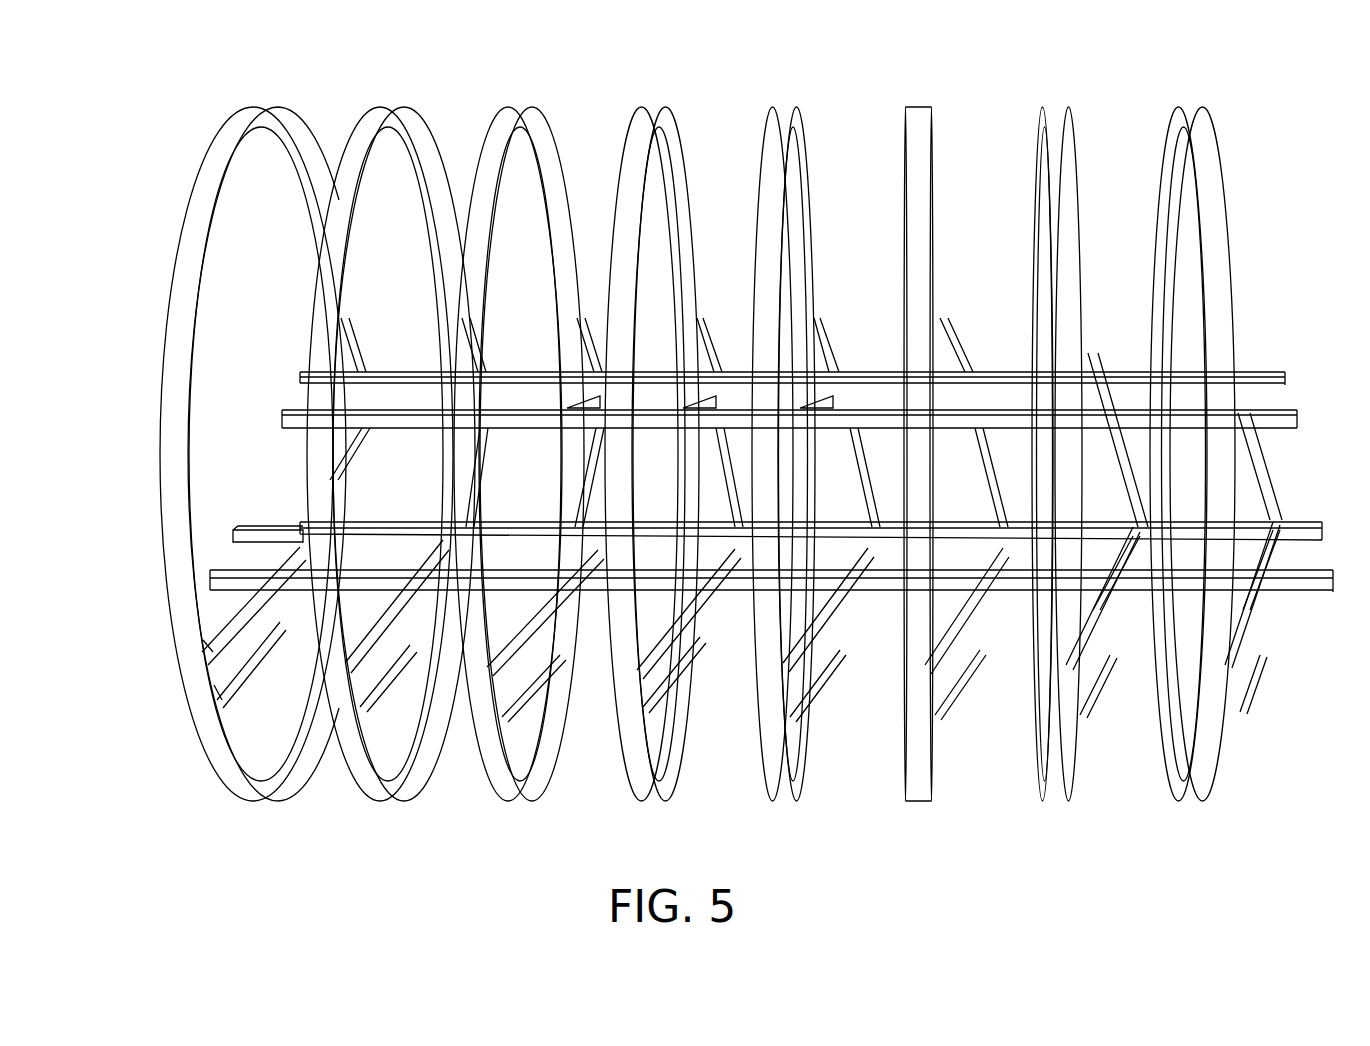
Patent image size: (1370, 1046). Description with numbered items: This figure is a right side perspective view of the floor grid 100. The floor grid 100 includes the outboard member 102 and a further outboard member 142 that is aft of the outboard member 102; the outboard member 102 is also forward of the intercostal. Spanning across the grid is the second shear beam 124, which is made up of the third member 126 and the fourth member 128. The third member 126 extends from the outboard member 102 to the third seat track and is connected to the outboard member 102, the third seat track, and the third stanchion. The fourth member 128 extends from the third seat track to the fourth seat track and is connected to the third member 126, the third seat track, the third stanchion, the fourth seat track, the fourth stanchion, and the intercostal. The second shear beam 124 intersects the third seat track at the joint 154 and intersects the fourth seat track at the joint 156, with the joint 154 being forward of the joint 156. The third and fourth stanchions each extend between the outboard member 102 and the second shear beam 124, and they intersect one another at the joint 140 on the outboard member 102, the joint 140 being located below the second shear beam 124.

The floor grid 100 is at (594, 68).
The outboard member 102 is at (218, 152).
The outboard member 142 is at (372, 120).
The second shear beam 124 is at (237, 555).
The fourth member 128 is at (275, 560).
The joint 156 is at (298, 528).
The joint 154 is at (285, 570).
The third member 126 is at (240, 612).
The joint 140 is at (225, 712).